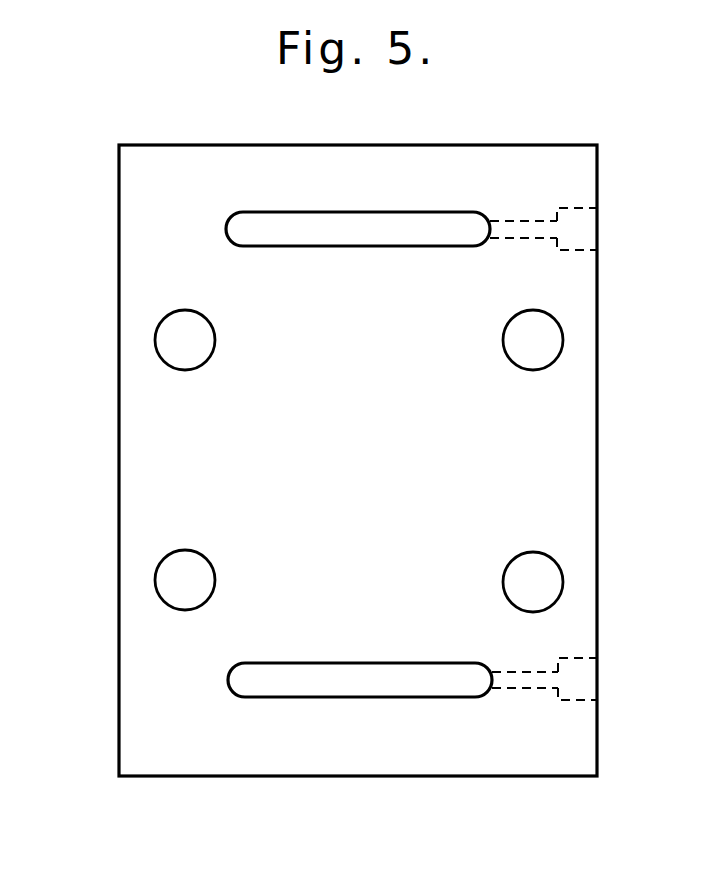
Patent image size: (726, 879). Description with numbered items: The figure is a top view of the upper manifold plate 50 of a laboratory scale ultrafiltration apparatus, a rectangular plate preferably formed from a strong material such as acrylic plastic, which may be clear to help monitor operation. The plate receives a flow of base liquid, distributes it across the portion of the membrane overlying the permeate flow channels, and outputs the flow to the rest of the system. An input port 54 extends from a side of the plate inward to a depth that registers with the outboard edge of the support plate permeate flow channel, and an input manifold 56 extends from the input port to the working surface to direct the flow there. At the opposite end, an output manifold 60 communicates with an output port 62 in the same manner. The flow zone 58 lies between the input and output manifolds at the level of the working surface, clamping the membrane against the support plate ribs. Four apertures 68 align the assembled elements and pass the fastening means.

The upper manifold plate 50 is at (460, 160).
The input port 54 is at (597, 218).
The input manifold 56 is at (382, 247).
The flow zone 58 is at (382, 457).
The output manifold 60 is at (374, 668).
The output port 62 is at (597, 673).
The apertures 68 is at (214, 336).